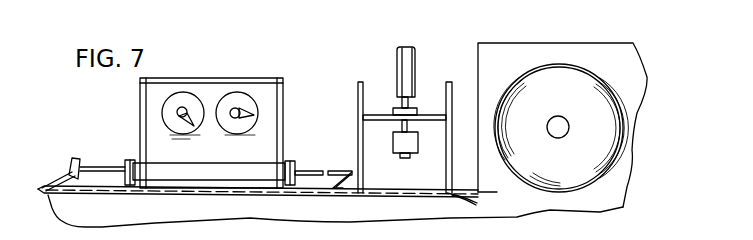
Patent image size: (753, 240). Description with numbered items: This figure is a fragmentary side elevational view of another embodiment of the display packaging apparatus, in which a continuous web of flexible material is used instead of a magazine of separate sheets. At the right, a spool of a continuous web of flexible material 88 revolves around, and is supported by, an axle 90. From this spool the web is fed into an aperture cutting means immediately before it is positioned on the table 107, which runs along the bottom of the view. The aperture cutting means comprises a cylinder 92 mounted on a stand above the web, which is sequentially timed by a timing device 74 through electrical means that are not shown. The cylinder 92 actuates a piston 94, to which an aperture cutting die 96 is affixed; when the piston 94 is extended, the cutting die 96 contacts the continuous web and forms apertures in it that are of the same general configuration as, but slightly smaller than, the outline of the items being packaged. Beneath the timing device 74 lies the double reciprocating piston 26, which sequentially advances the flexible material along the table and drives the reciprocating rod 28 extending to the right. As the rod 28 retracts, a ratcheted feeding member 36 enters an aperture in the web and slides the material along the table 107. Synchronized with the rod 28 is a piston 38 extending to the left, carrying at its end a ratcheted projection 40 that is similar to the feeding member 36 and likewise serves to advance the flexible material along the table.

The double reciprocating piston 26 is at (178, 176).
The reciprocating rod 28 is at (322, 170).
The ratcheted feeding member 36 is at (334, 194).
The piston 38 is at (112, 157).
The ratcheted projection 40 is at (73, 162).
The timing device 74 is at (270, 70).
The spool of continuous web of flexible material 88 is at (612, 119).
The axle 90 is at (560, 139).
The cylinder 92 is at (400, 57).
The piston 94 is at (402, 101).
The aperture cutting die 96 is at (418, 143).
The table 107 is at (83, 197).